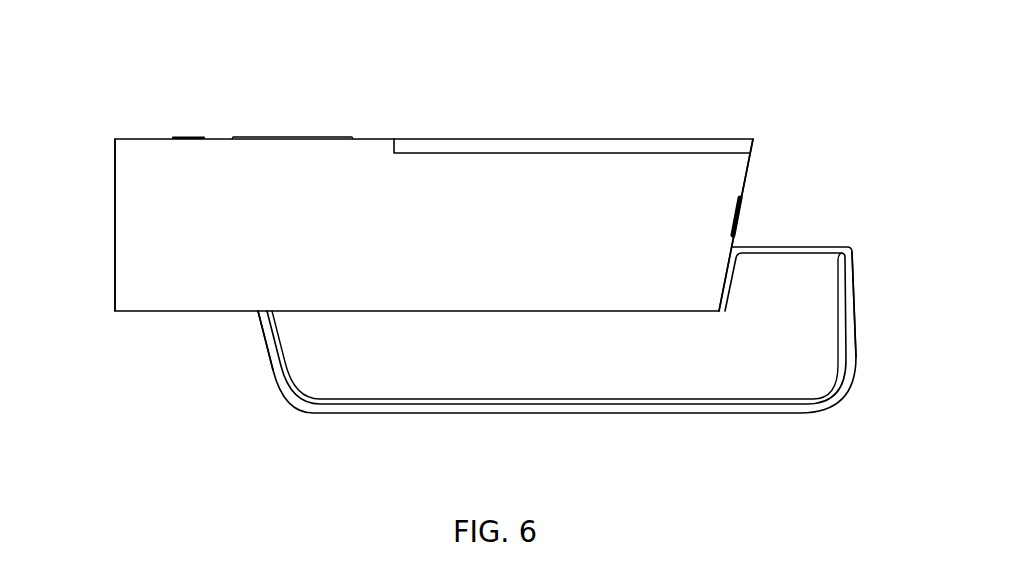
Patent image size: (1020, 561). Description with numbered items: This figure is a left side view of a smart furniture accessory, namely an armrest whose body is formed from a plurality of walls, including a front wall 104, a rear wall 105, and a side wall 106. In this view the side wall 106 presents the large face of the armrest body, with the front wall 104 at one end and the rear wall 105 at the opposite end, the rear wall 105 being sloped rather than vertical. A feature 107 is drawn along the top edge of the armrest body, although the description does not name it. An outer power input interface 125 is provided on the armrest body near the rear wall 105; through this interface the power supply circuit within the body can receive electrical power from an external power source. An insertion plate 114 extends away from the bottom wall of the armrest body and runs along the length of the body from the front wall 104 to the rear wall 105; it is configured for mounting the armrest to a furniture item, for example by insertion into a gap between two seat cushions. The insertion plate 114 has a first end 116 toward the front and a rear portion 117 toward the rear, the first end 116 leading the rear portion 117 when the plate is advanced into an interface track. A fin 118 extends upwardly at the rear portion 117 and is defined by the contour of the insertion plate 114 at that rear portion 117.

The front wall 104 is at (110, 233).
The rear wall 105 is at (750, 183).
The side wall 106 is at (421, 241).
The top ledge 107 is at (636, 148).
The insertion plate 114 is at (574, 370).
The first end 116 is at (265, 350).
The rear portion 117 is at (852, 355).
The fin 118 is at (825, 275).
The outer power input interface 125 is at (743, 222).